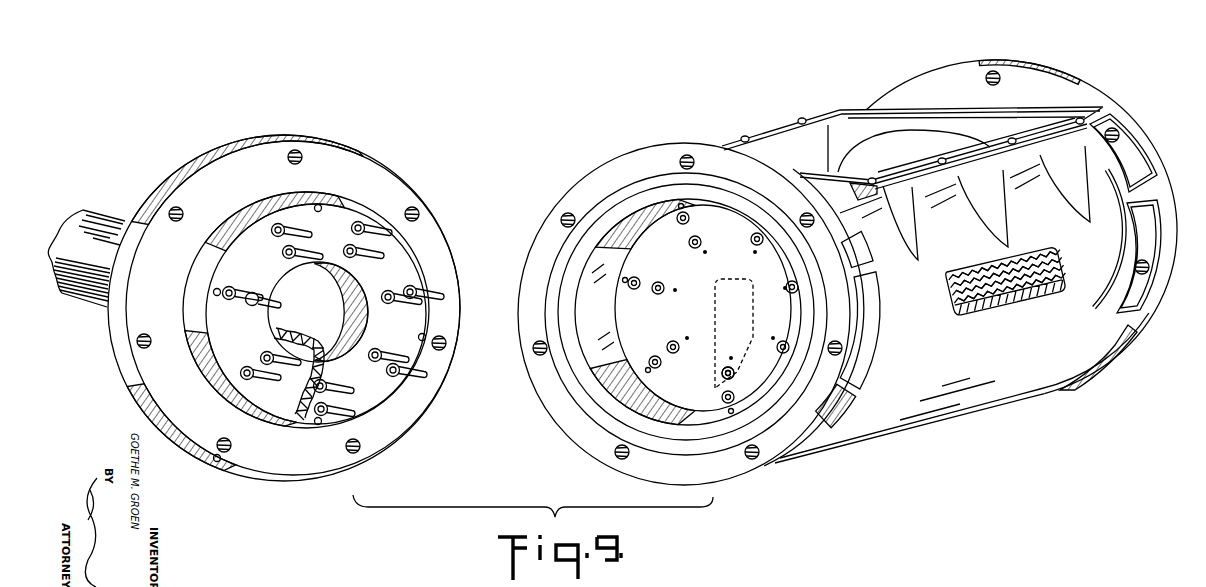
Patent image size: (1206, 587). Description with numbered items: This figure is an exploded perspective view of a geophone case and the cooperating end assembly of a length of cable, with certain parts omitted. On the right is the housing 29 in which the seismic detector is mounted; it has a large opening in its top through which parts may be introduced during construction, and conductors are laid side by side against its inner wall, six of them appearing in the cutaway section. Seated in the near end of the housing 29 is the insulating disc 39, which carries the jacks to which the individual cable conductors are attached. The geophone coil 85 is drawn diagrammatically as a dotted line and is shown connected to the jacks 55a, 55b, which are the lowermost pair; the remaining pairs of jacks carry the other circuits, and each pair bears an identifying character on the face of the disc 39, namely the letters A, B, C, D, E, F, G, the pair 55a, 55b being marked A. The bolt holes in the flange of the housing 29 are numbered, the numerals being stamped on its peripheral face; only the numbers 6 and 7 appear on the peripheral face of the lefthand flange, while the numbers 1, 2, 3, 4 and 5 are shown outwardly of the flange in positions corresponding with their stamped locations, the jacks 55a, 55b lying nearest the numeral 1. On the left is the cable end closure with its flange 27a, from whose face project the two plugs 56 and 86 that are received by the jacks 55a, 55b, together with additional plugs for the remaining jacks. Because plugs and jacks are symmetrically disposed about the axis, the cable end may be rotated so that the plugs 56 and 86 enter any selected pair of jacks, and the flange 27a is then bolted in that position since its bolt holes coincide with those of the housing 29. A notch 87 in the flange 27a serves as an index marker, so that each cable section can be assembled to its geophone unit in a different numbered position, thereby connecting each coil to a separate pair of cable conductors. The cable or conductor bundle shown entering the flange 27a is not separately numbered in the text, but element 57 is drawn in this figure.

The flange 27a is at (160, 192).
The notch 87 is at (218, 462).
The plug 86 is at (329, 387).
The plug 56 is at (334, 415).
The cable 57 is at (302, 392).
The hole number 5 is at (847, 263).
The hole number 4 is at (560, 216).
The hole number 3 is at (834, 311).
The hole number 6 is at (816, 213).
The hole number 7 is at (845, 352).
The hole number 1 is at (686, 332).
The hole number 2 is at (686, 338).
The insulating disc 39 is at (683, 326).
The geophone coil 85 is at (739, 284).
The jack 55a is at (721, 396).
The jack 55b is at (734, 376).
The housing 29 is at (905, 412).
The identifying character A is at (734, 380).
The identifying character B is at (673, 355).
The identifying character C is at (635, 291).
The identifying character D is at (677, 226).
The identifying character E is at (750, 235).
The identifying character F is at (787, 280).
The identifying character G is at (784, 339).